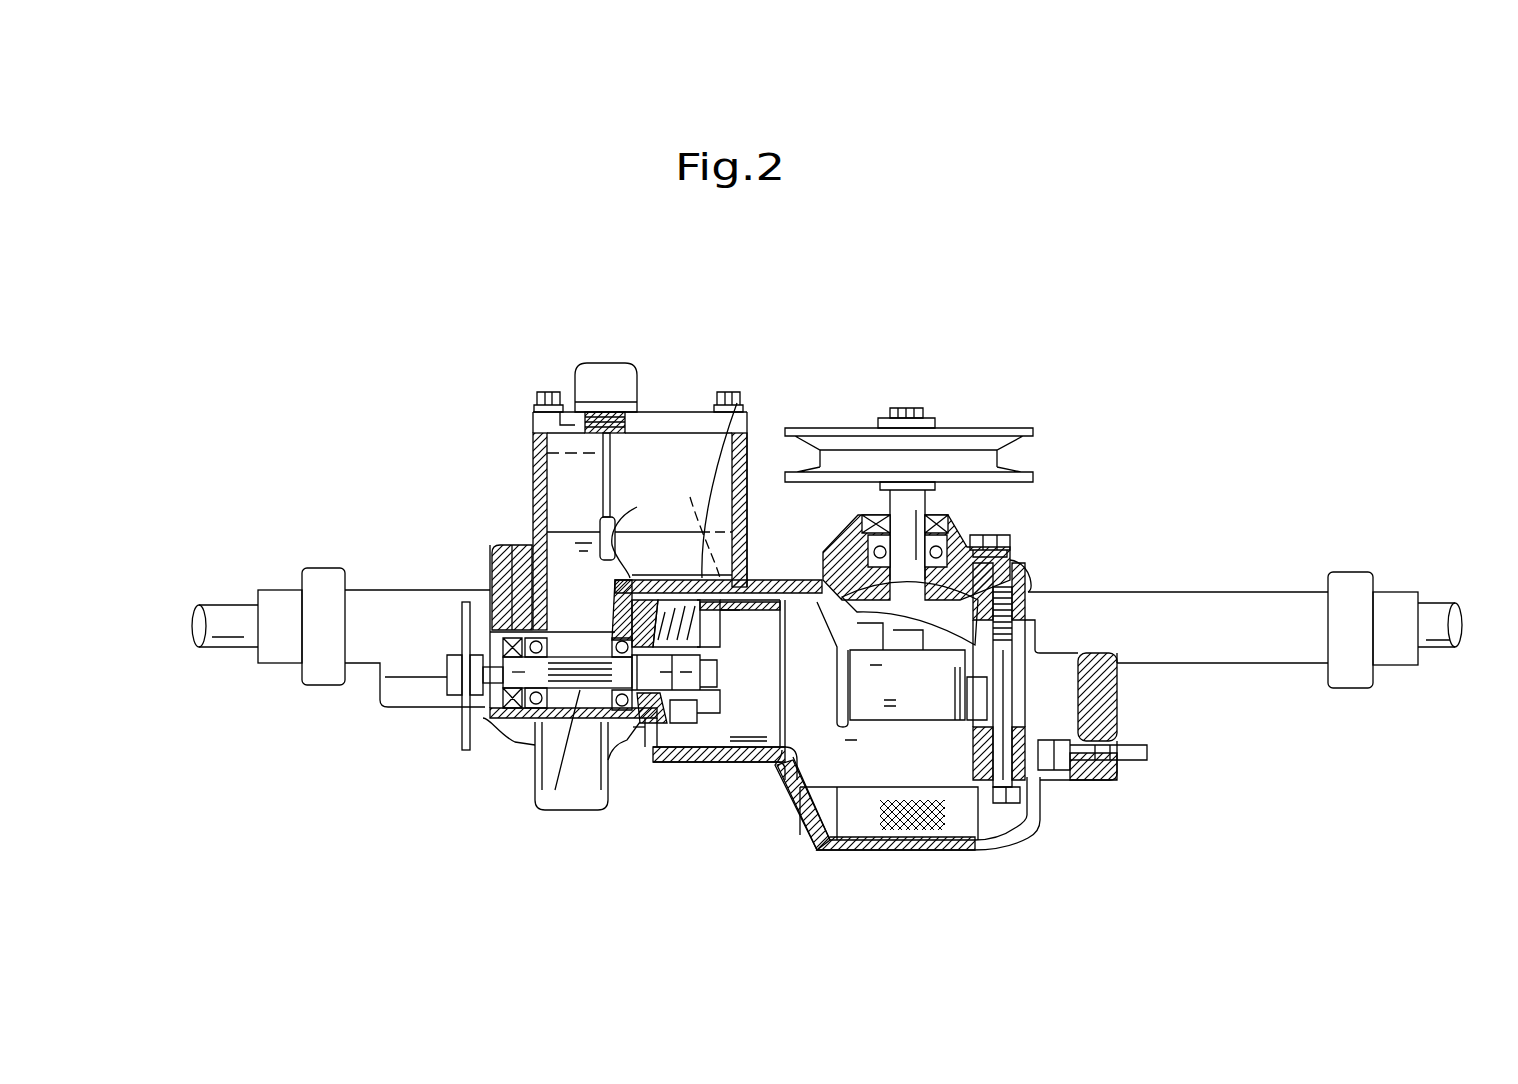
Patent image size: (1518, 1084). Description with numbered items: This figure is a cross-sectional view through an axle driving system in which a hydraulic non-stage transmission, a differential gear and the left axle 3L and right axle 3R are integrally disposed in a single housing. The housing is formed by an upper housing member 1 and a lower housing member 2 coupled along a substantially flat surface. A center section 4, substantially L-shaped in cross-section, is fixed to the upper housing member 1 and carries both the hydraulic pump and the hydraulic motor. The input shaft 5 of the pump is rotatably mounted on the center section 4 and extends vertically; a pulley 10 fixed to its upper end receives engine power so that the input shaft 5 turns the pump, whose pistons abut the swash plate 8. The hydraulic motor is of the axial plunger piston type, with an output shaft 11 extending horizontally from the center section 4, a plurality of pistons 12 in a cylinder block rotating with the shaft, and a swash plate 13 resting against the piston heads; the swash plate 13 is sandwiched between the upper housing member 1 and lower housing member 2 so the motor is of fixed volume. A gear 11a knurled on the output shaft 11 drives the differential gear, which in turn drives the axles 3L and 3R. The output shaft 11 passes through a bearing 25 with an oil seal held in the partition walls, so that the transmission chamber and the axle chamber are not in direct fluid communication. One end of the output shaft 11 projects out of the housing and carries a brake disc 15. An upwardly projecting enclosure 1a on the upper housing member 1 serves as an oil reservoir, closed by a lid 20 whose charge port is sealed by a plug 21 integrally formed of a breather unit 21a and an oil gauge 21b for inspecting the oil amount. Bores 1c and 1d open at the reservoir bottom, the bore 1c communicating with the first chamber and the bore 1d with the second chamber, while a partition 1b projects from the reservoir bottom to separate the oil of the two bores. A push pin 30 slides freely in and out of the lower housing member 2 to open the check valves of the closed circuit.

The upper housing member 1 is at (392, 592).
The enclosure 1a is at (532, 466).
The partition 1b is at (637, 507).
The bore 1c is at (737, 403).
The bore 1d is at (540, 585).
The lower housing member 2 is at (382, 700).
The right axle 3R is at (236, 650).
The left axle 3L is at (1437, 650).
The center section 4 is at (852, 772).
The input shaft 5 is at (911, 407).
The swash plate 8 is at (934, 626).
The pulley 10 is at (1025, 428).
The output shaft 11 is at (505, 690).
The gear 11a is at (600, 722).
The pistons 12 is at (720, 715).
The swash plate 13 is at (647, 748).
The brake disc 15 is at (457, 737).
The lid 20 is at (568, 407).
The plug 21 is at (627, 367).
The breather unit 21a is at (637, 408).
The oil gauge 21b is at (608, 460).
The bearing 25 is at (640, 752).
The push pin 30 is at (1142, 742).